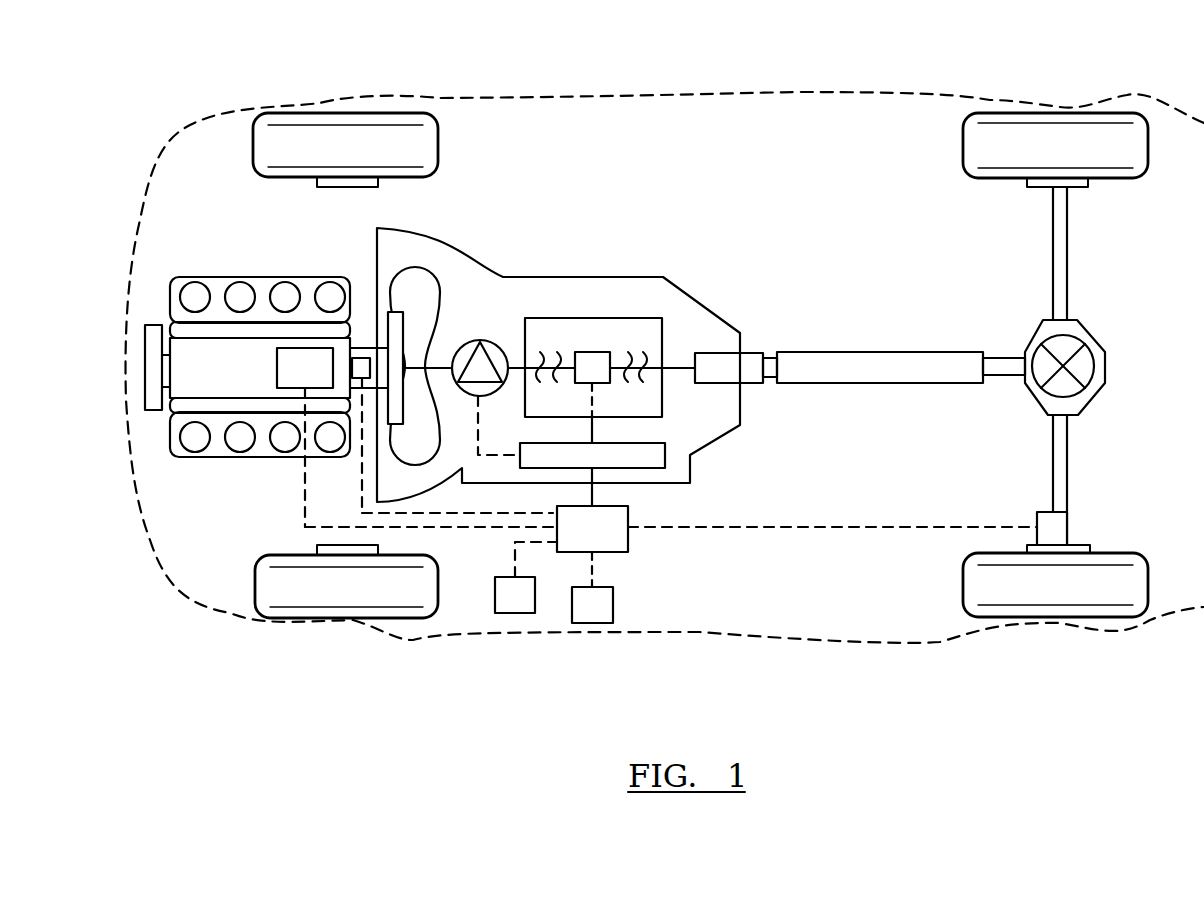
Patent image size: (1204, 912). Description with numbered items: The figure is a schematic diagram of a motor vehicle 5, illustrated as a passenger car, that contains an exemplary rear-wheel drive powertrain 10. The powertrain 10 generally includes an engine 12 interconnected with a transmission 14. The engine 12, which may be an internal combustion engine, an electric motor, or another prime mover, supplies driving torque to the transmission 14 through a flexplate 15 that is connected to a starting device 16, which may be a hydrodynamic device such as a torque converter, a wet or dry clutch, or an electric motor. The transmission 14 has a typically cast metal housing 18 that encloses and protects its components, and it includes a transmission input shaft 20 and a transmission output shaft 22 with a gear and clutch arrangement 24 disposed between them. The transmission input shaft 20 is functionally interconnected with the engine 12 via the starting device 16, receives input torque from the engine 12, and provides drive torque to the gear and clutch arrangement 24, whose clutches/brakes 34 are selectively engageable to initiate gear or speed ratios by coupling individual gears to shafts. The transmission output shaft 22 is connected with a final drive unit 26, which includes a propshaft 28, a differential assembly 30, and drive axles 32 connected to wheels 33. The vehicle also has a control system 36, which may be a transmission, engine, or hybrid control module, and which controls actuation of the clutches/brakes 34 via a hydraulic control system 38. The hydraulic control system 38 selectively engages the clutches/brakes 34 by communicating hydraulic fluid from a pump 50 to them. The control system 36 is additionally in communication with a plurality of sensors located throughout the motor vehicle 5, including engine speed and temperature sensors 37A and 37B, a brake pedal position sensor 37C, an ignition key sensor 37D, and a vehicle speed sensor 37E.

The motor vehicle 5 is at (795, 90).
The powertrain 10 is at (690, 222).
The engine 12 is at (224, 383).
The transmission 14 is at (566, 278).
The flexplate 15 is at (386, 313).
The starting device 16 is at (417, 267).
The housing 18 is at (705, 302).
The transmission input shaft 20 is at (440, 368).
The transmission output shaft 22 is at (678, 370).
The gear and clutch arrangement 24 is at (592, 318).
The final drive unit 26 is at (867, 315).
The propshaft 28 is at (872, 383).
The differential assembly 30 is at (1100, 368).
The drive axles 32 is at (1067, 252).
The wheels 33 is at (1107, 178).
The clutches/brakes 34 is at (603, 352).
The control system 36 is at (628, 537).
The engine speed and temperature sensor 37A is at (278, 372).
The engine speed and temperature sensor 37B is at (358, 357).
The brake pedal position sensor 37C is at (517, 613).
The ignition key sensor 37D is at (613, 605).
The vehicle speed sensor 37E is at (1043, 512).
The hydraulic control system 38 is at (665, 455).
The pump 50 is at (487, 340).